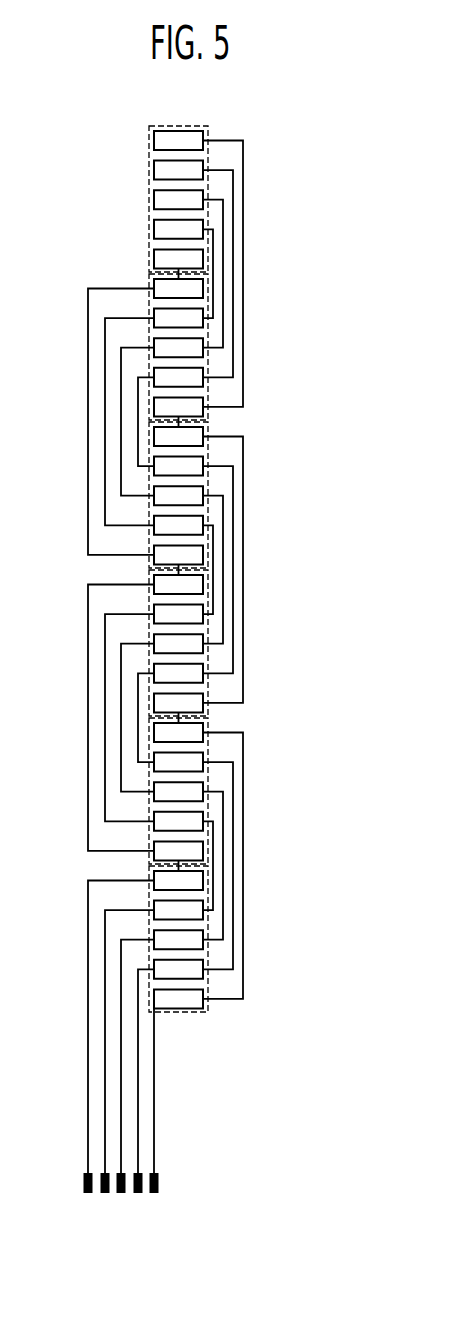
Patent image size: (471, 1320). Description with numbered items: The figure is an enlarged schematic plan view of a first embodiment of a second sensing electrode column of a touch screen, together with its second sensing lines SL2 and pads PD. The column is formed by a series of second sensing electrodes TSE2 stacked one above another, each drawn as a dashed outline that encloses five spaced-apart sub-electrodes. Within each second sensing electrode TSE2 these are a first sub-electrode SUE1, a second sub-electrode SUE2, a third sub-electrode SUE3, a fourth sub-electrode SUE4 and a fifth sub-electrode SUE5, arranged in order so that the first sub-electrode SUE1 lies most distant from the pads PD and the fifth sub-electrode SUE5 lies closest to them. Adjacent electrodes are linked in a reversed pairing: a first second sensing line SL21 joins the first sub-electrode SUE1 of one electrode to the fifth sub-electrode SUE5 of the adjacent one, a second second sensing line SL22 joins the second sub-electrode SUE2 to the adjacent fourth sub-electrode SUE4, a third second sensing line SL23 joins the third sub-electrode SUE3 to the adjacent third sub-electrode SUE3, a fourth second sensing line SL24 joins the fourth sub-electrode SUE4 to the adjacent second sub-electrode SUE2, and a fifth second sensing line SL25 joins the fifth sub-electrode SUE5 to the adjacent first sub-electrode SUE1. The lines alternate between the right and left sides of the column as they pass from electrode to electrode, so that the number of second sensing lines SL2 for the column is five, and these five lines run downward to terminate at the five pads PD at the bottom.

The second sensing electrode TSE2 is at (177, 124).
The first sub-electrode SUE1 is at (166, 142).
The second sub-electrode SUE2 is at (166, 172).
The third sub-electrode SUE3 is at (166, 201).
The fourth sub-electrode SUE4 is at (166, 230).
The fifth sub-electrode SUE5 is at (166, 260).
The second sensing lines SL2 is at (355, 153).
The first second sensing line SL21 is at (243, 168).
The second second sensing line SL22 is at (233, 197).
The third second sensing line SL23 is at (223, 223).
The fourth second sensing line SL24 is at (213, 247).
The fifth second sensing line SL25 is at (178, 272).
The pads PD is at (84, 1193).